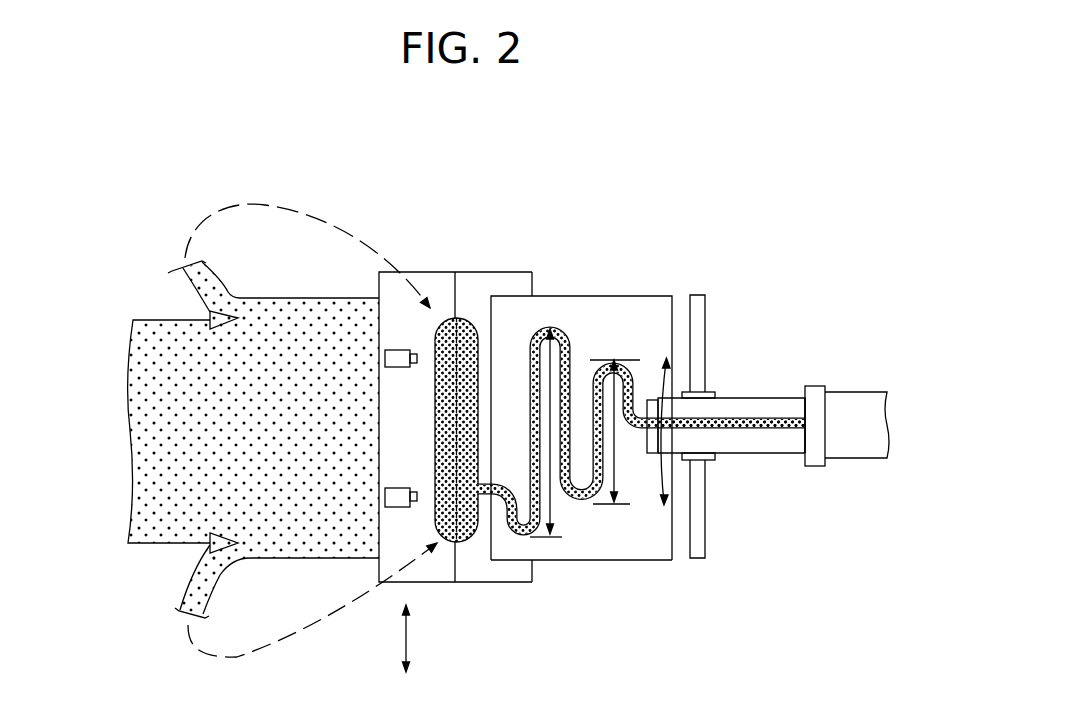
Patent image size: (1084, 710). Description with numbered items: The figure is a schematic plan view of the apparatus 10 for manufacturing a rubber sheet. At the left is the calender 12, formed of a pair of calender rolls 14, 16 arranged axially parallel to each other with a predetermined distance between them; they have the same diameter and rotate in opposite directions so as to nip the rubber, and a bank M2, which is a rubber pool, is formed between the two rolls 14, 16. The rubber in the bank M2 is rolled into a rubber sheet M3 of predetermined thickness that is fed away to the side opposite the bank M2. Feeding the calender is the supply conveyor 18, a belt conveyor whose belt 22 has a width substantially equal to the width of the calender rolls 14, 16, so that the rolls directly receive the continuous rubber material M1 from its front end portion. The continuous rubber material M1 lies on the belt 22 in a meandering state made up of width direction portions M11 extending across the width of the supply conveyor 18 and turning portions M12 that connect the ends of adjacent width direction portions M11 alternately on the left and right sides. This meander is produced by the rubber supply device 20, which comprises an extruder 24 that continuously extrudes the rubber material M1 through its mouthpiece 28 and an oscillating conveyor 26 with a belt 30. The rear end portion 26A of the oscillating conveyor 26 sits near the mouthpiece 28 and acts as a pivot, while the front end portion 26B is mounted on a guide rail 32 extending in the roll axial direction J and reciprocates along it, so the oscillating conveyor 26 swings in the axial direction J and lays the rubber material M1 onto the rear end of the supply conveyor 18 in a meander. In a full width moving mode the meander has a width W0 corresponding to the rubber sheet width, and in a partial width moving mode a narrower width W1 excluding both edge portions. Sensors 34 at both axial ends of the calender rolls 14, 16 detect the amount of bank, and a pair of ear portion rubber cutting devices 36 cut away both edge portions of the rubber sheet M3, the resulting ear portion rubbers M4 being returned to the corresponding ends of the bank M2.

The apparatus for manufacturing a rubber sheet 10 is at (482, 151).
The calender 12 is at (470, 214).
The calender roll 14 is at (433, 285).
The calender roll 16 is at (475, 283).
The supply conveyor 18 is at (610, 562).
The rubber supply device 20 is at (868, 328).
The belt 22 is at (641, 425).
The extruder 24 is at (857, 392).
The oscillating conveyor 26 is at (775, 398).
The rear end portion 26A is at (794, 448).
The front end portion 26B is at (650, 455).
The mouthpiece 28 is at (822, 464).
The belt 30 is at (755, 453).
The guide rail 32 is at (700, 318).
The sensors 34 is at (383, 342).
The ear portion rubber cutting devices 36 is at (232, 316).
The continuous rubber material M1 is at (732, 418).
The bank M2 is at (470, 542).
The rubber sheet M3 is at (147, 532).
The ear portion rubbers M4 is at (205, 283).
The width direction portions M11 is at (528, 392).
The turning portions M12 is at (552, 327).
The width W0 is at (543, 507).
The width W1 is at (643, 397).
The axial direction J is at (408, 652).